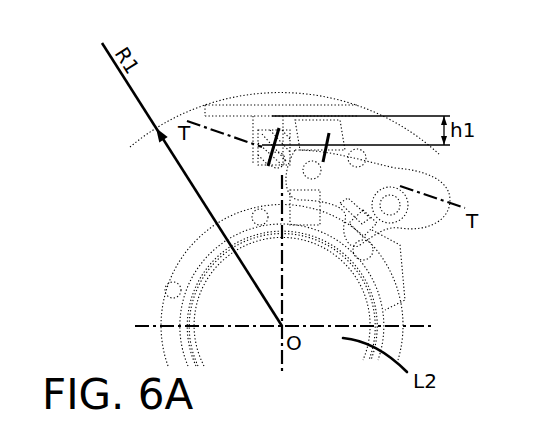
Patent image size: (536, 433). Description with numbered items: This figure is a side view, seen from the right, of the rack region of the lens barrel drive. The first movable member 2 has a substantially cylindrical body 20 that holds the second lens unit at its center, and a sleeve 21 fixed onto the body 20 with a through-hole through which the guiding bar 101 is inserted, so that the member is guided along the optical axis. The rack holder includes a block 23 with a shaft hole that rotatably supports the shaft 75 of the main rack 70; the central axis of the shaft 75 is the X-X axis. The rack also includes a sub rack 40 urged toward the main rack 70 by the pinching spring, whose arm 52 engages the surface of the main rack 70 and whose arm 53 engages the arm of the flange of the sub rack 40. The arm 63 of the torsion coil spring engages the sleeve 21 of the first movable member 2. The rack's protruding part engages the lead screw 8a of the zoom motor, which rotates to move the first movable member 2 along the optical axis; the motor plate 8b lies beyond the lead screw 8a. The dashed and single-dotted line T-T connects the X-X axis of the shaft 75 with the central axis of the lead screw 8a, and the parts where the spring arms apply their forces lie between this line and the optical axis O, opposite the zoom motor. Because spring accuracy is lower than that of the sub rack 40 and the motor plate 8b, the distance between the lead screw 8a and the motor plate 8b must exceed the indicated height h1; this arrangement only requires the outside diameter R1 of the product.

The first movable member 2 is at (165, 303).
The body 20 is at (178, 257).
The arm 52 is at (270, 187).
The main rack 70 is at (262, 170).
The lead screw 8a is at (272, 135).
The sub rack 40 is at (298, 135).
The motor plate 8b is at (337, 117).
The block 23 is at (297, 199).
The shaft 75 is at (300, 155).
The guiding bar 101 is at (388, 200).
The sleeve 21 is at (390, 215).
The arm 63 is at (383, 215).
The arm 53 is at (345, 215).